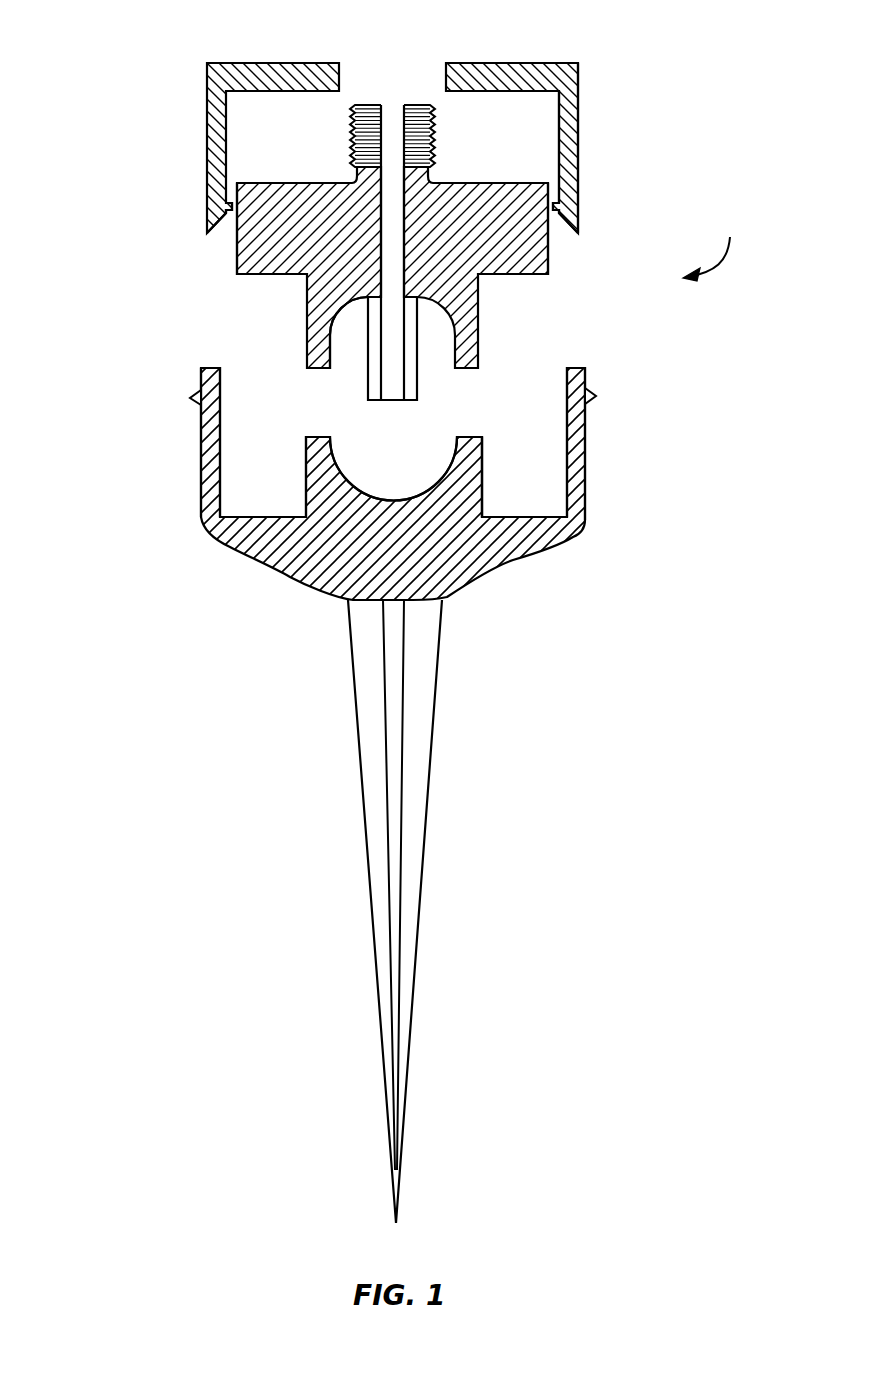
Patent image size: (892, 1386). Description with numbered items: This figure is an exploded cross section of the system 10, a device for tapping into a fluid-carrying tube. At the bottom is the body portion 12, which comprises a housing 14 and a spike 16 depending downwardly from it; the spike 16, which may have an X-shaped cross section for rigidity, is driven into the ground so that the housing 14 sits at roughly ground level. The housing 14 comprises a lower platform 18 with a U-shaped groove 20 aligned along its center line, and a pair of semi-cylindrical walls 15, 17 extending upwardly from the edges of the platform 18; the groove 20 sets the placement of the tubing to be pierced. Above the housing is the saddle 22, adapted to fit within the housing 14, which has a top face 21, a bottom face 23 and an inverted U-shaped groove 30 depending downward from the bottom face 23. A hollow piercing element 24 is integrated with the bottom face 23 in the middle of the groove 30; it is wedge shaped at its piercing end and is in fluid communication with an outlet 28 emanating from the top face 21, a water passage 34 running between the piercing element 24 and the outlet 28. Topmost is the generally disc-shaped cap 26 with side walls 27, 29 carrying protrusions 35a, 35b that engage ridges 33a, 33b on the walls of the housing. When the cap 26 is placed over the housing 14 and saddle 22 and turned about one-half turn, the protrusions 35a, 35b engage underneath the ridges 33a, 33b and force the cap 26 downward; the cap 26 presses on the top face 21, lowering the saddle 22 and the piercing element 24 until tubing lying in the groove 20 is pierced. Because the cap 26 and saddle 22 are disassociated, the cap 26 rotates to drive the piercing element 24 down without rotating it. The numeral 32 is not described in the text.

The system 10 is at (718, 241).
The body portion 12 is at (457, 592).
The housing 14 is at (518, 532).
The semi-cylindrical wall 15 is at (588, 435).
The spike 16 is at (422, 742).
The semi-cylindrical wall 17 is at (220, 466).
The lower platform 18 is at (543, 515).
The U-shaped groove 20 is at (343, 497).
The top face 21 is at (465, 183).
The saddle 22 is at (550, 257).
The bottom face 23 is at (250, 276).
The piercing element 24 is at (367, 380).
The cap 26 is at (552, 63).
The side wall 27 is at (207, 90).
The outlet 28 is at (363, 105).
The side wall 29 is at (578, 105).
The inverted U-shaped groove 30 is at (310, 327).
The clip inner wall 32 is at (578, 177).
The ridge 33a is at (195, 397).
The ridge 33b is at (587, 390).
The water passage 34 is at (395, 108).
The protrusion 35a is at (213, 216).
The protrusion 35b is at (571, 216).